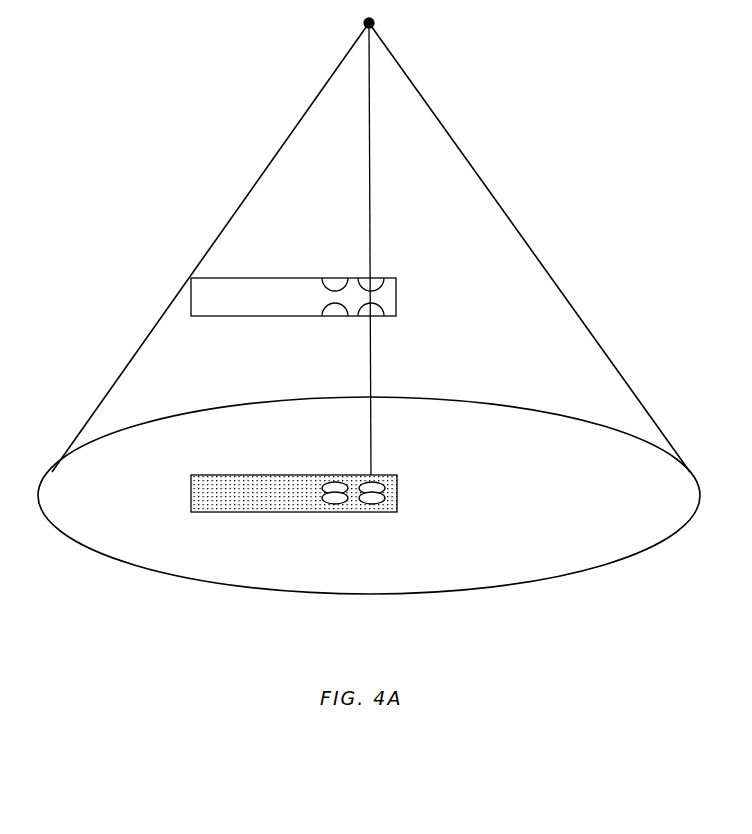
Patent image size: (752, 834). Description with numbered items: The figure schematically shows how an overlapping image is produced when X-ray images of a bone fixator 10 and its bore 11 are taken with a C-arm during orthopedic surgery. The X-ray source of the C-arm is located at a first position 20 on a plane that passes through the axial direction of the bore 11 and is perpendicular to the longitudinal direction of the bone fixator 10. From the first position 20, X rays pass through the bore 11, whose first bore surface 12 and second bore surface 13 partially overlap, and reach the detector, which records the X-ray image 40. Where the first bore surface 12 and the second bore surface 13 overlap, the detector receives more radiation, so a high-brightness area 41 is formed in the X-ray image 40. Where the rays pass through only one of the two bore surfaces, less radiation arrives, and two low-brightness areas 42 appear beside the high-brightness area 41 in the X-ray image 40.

The first position 20 is at (375, 22).
The bone fixator 10 is at (212, 312).
The bore 11 is at (366, 319).
The first bore surface 12 is at (377, 273).
The second bore surface 13 is at (380, 319).
The X-ray image 40 is at (595, 568).
The high-brightness area 41 is at (383, 488).
The low-brightness areas 42 is at (378, 482).